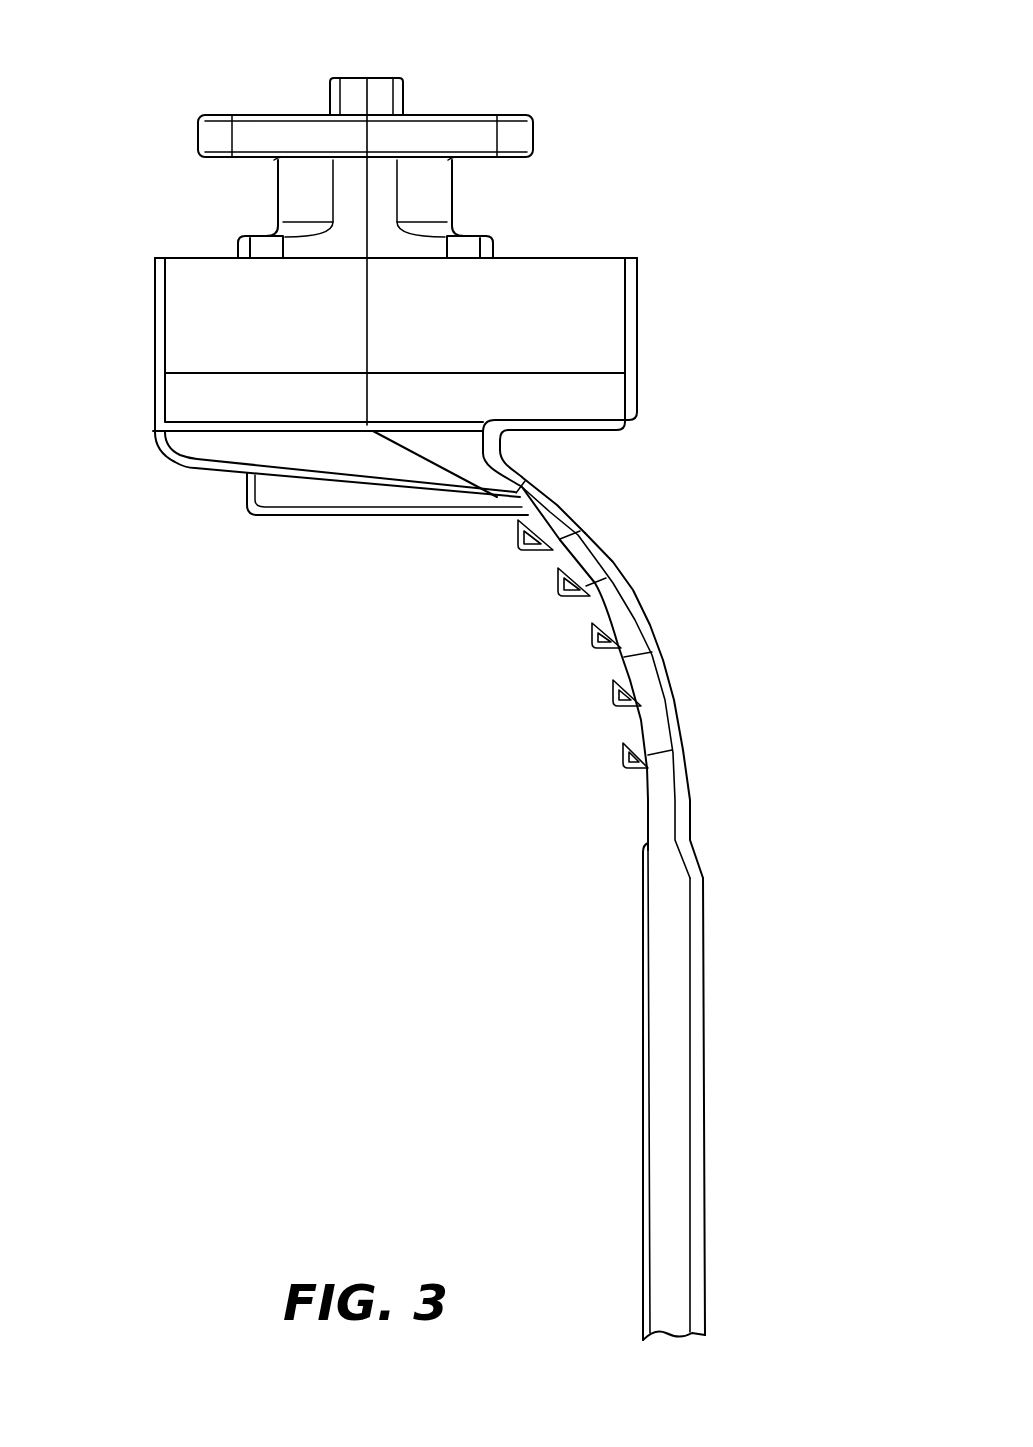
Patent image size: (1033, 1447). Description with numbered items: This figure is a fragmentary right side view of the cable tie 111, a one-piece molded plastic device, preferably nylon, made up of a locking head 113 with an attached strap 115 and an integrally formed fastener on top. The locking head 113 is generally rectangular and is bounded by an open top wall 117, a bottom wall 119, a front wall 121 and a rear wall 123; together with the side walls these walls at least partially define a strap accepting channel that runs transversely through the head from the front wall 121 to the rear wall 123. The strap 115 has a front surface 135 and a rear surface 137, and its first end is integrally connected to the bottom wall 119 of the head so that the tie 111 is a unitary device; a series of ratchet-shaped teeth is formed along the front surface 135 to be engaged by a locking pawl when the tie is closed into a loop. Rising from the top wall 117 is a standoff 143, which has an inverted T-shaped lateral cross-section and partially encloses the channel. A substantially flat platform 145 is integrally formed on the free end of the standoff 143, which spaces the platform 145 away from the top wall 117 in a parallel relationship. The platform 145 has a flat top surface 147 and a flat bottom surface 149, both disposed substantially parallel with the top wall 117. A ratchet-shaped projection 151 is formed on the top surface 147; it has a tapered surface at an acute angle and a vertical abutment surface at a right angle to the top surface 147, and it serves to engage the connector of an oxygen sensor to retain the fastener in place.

The cable tie 111 is at (338, 985).
The locking head 113 is at (605, 295).
The strap 115 is at (680, 959).
The top wall 117 is at (587, 258).
The bottom wall 119 is at (593, 432).
The front wall 121 is at (152, 397).
The rear wall 123 is at (637, 393).
The front surface 135 is at (642, 1090).
The rear surface 137 is at (705, 1153).
The standoff 143 is at (437, 203).
The platform 145 is at (525, 140).
The top surface 147 is at (233, 113).
The bottom surface 149 is at (215, 158).
The ratchet-shaped projection 151 is at (353, 78).